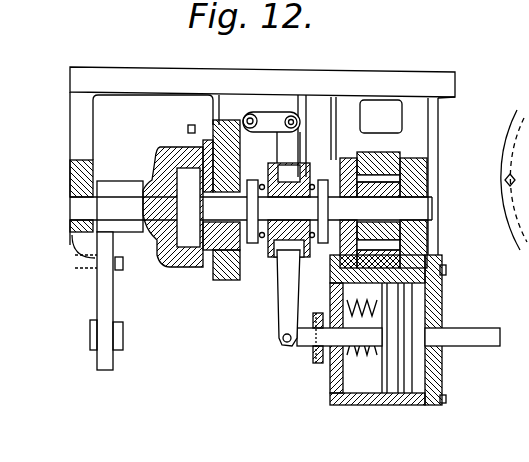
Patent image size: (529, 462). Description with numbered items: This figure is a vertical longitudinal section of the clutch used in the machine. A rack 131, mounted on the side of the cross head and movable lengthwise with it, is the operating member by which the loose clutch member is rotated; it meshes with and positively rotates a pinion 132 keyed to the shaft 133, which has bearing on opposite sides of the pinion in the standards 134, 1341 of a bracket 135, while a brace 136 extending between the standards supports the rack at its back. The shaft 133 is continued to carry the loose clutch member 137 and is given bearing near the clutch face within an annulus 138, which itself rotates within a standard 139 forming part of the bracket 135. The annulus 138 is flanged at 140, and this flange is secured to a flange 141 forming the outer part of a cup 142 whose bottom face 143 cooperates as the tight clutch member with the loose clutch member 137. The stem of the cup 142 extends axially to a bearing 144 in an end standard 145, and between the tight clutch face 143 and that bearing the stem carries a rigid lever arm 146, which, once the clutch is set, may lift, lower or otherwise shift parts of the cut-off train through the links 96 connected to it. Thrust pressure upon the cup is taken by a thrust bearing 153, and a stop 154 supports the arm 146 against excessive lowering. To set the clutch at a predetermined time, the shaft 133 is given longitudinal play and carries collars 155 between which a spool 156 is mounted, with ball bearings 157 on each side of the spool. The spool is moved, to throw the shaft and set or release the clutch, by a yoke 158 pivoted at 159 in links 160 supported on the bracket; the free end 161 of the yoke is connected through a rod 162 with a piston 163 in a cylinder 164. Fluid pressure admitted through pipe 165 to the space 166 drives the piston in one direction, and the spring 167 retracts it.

The links 96 is at (95, 338).
The rack 131 is at (405, 162).
The pinion 132 is at (400, 238).
The shaft 133 is at (432, 208).
The standard 134 is at (335, 270).
The standard 1341 is at (420, 262).
The bracket 135 is at (307, 82).
The brace 136 is at (381, 134).
The loose clutch member 137 is at (225, 281).
The annulus 138 is at (254, 191).
The standard 139 is at (215, 110).
The flange 140 is at (210, 282).
The flange 141 is at (188, 129).
The cup 142 is at (190, 268).
The bottom face 143 is at (168, 266).
The bearing 144 is at (75, 268).
The end standard 145 is at (80, 122).
The rigid lever arm 146 is at (108, 312).
The thrust bearing 153 is at (108, 158).
The stop 154 is at (75, 269).
The collars 155 is at (334, 100).
The spool 156 is at (288, 262).
The ball bearings 157 is at (303, 82).
The yoke 158 is at (268, 112).
The pivot 159 is at (290, 112).
The links 160 is at (273, 110).
The free end 161 is at (282, 320).
The rod 162 is at (305, 347).
The piston 163 is at (398, 376).
The cylinder 164 is at (420, 400).
The pipe 165 is at (458, 332).
The space 166 is at (428, 296).
The spring 167 is at (372, 320).